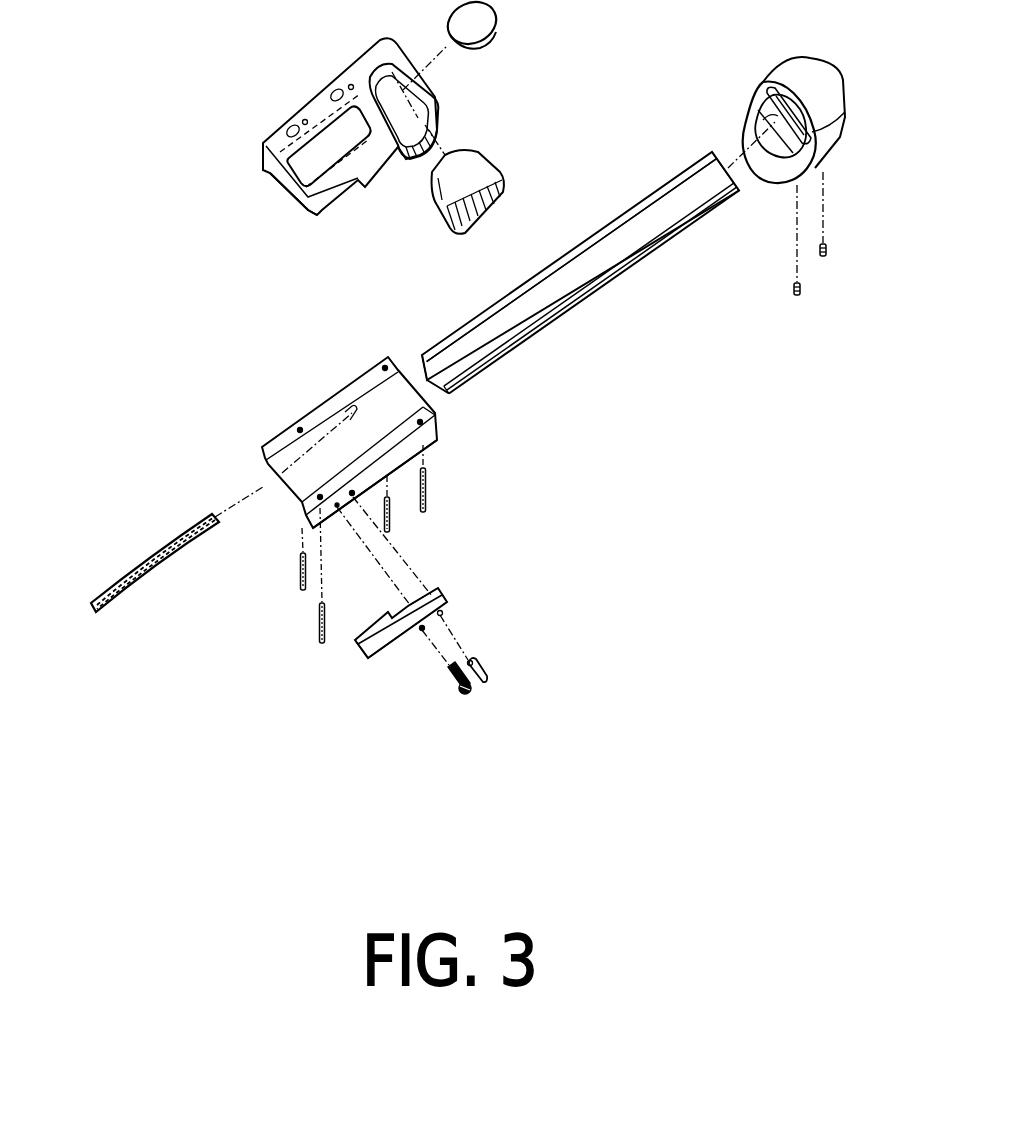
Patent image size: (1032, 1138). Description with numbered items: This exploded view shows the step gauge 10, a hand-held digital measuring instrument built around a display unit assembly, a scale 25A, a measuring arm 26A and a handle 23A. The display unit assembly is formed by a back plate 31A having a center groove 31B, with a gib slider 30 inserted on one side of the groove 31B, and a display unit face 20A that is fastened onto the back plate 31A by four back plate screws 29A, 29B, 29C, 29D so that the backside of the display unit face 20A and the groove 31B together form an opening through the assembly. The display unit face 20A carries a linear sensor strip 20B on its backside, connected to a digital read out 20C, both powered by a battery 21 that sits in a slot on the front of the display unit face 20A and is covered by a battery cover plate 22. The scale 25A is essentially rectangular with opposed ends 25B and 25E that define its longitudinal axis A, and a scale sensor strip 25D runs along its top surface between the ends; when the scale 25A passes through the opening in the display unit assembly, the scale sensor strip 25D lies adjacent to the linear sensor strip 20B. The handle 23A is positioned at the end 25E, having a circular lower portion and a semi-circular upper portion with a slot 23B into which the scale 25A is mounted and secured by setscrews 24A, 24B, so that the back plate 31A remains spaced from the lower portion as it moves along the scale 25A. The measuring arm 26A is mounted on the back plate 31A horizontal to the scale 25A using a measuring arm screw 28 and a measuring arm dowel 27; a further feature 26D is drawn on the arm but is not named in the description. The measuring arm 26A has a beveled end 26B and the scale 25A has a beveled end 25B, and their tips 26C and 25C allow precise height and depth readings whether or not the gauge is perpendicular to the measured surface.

The step gauge 10 is at (585, 500).
The display unit face 20A is at (320, 100).
The linear sensor strip 20B is at (308, 205).
The digital read out 20C is at (342, 143).
The battery 21 is at (477, 27).
The battery cover plate 22 is at (477, 167).
The handle 23A is at (763, 104).
The slot 23B is at (762, 98).
The setscrew 24A is at (797, 298).
The setscrew 24B is at (826, 262).
The scale 25A is at (607, 293).
The end of scale 25B is at (462, 393).
The tip of beveled end 25C is at (426, 378).
The scale sensor strip 25D is at (533, 302).
The end of scale 25E is at (728, 150).
The measuring arm 26A is at (447, 613).
The beveled end 26B is at (380, 658).
The tip 26C is at (358, 645).
The block top 26D is at (443, 599).
The measuring arm dowel 27 is at (487, 687).
The measuring arm screw 28 is at (467, 695).
The back plate screw 29A is at (317, 620).
The back plate screw 29B is at (298, 578).
The back plate screw 29C is at (392, 512).
The back plate screw 29D is at (427, 490).
The gib slider 30 is at (118, 597).
The back plate 31A is at (263, 458).
The center groove 31B is at (303, 482).
The longitudinal axis A is at (855, 70).